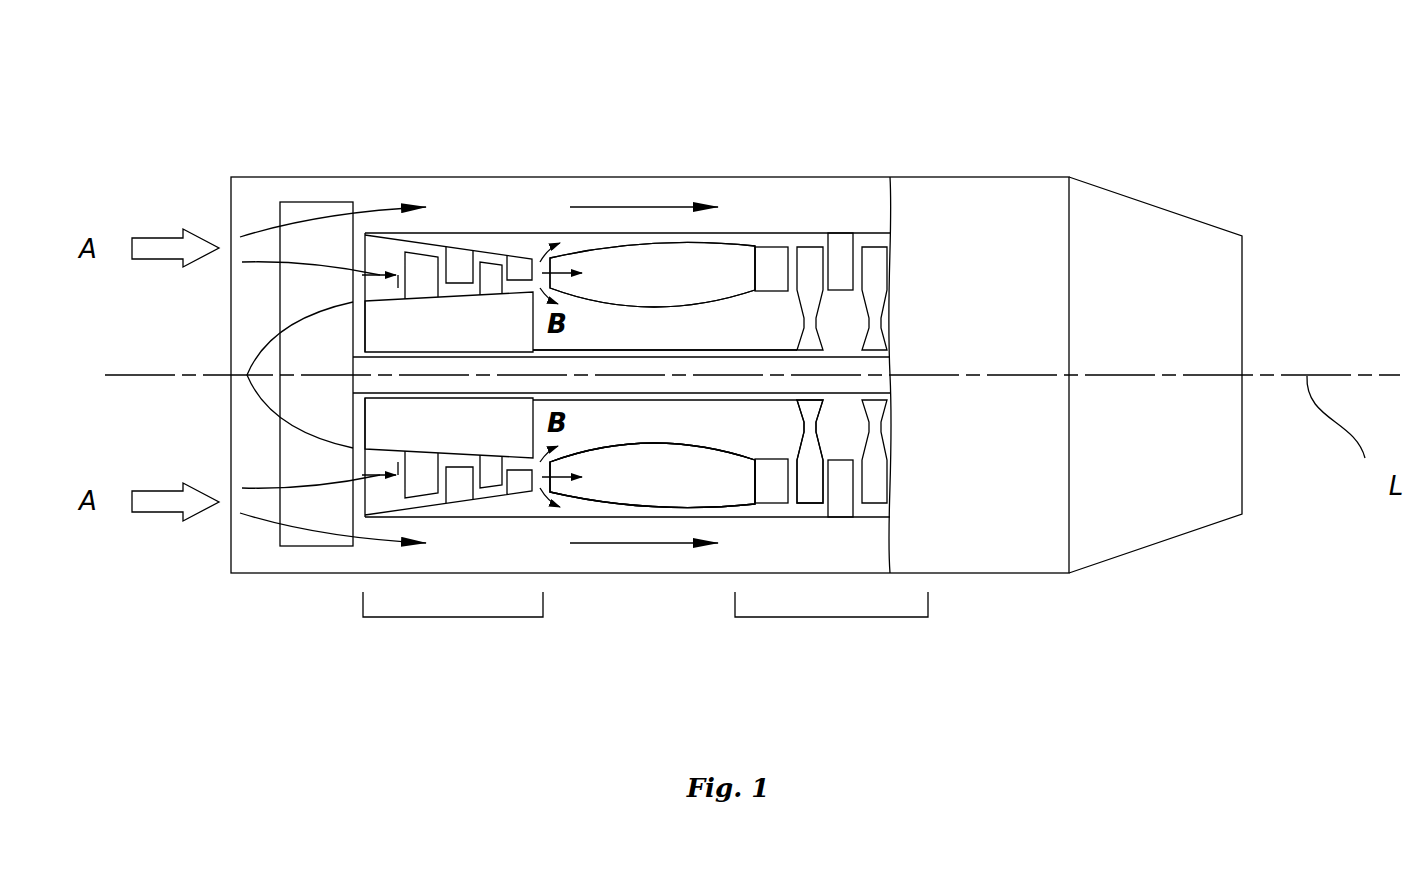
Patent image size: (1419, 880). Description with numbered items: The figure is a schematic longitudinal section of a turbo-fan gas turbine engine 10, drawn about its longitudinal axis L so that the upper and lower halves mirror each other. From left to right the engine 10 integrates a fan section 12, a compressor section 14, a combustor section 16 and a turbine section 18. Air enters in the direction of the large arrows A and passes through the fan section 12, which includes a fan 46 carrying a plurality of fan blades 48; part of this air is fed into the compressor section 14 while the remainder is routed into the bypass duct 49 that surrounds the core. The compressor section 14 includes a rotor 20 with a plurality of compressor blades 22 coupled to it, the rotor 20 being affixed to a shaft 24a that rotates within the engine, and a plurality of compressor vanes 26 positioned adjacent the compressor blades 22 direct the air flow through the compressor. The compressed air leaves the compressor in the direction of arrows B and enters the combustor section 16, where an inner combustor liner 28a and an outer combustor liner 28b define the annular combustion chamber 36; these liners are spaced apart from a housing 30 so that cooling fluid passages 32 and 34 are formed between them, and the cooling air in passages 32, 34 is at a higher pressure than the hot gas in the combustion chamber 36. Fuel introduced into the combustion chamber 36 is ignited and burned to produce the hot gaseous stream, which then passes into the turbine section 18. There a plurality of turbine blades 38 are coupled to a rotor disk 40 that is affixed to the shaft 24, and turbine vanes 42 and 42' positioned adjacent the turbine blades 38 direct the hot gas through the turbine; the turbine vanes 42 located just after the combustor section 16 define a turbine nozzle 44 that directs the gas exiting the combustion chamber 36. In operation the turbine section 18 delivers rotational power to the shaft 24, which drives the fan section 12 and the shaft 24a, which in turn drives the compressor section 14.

The gas turbine engine 10 is at (855, 90).
The fan section 12 is at (301, 552).
The compressor section 14 is at (457, 622).
The combustor section 16 is at (733, 514).
The turbine section 18 is at (907, 622).
The rotor 20 is at (390, 337).
The compressor blades 22 is at (493, 262).
The shaft 24 is at (646, 380).
The shaft 24a is at (597, 350).
The compressor vanes 26 is at (462, 258).
The inner combustor liner 28a is at (737, 303).
The outer combustor liner 28b is at (608, 245).
The housing 30 is at (673, 234).
The cooling fluid passage 32 is at (578, 245).
The cooling fluid passage 34 is at (673, 339).
The combustion chamber 36 is at (645, 287).
The turbine blades 38 is at (808, 493).
The rotor disk 40 is at (808, 432).
The turbine vanes 42 is at (767, 304).
The turbine vanes 42' is at (870, 327).
The turbine nozzle 44 is at (789, 252).
The fan 46 is at (279, 417).
The fan blades 48 is at (300, 250).
The bypass duct 49 is at (496, 221).